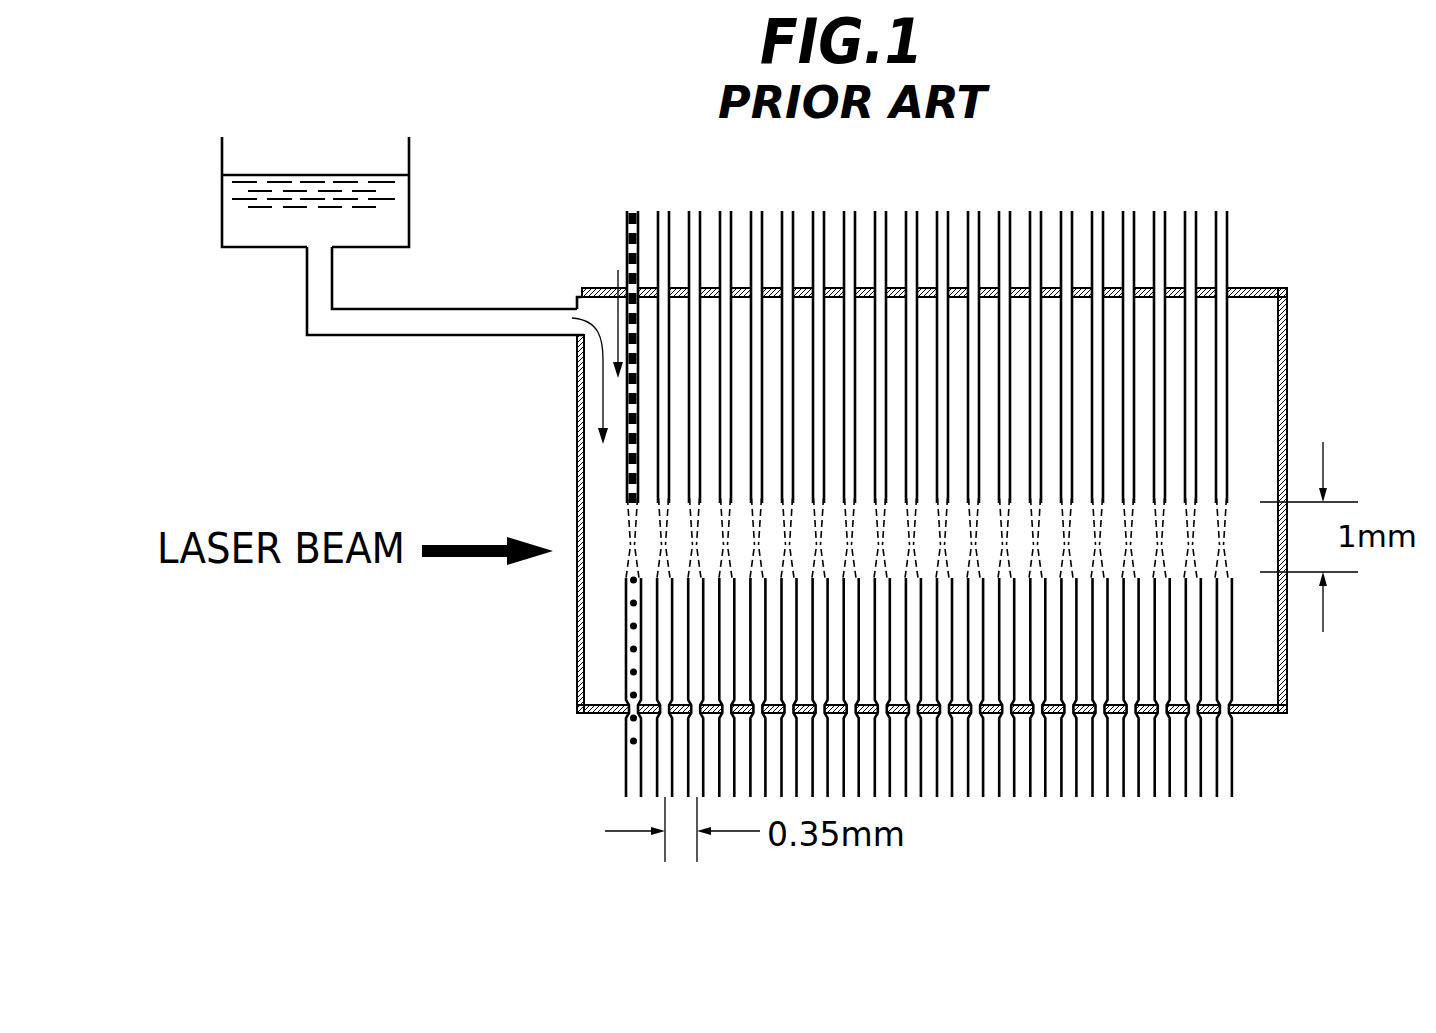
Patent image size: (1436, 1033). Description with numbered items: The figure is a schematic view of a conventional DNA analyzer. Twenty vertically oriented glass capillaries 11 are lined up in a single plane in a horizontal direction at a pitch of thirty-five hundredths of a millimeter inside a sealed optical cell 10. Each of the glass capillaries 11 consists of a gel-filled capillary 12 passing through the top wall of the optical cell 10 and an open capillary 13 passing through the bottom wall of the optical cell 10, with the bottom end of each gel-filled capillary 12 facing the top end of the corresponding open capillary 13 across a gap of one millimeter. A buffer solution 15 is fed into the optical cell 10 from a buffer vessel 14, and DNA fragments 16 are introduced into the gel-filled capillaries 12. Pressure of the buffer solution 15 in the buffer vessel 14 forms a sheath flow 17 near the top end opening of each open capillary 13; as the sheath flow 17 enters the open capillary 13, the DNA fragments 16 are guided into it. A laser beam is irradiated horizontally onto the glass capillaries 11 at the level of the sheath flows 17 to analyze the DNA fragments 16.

The optical cell 10 is at (1285, 302).
The glass capillaries 11 is at (1244, 415).
The gel-filled capillary 12 is at (1227, 242).
The open capillary 13 is at (1237, 750).
The buffer vessel 14 is at (220, 213).
The buffer solution 15 is at (264, 236).
The DNA fragments 16 is at (626, 248).
The sheath flow 17 is at (628, 553).